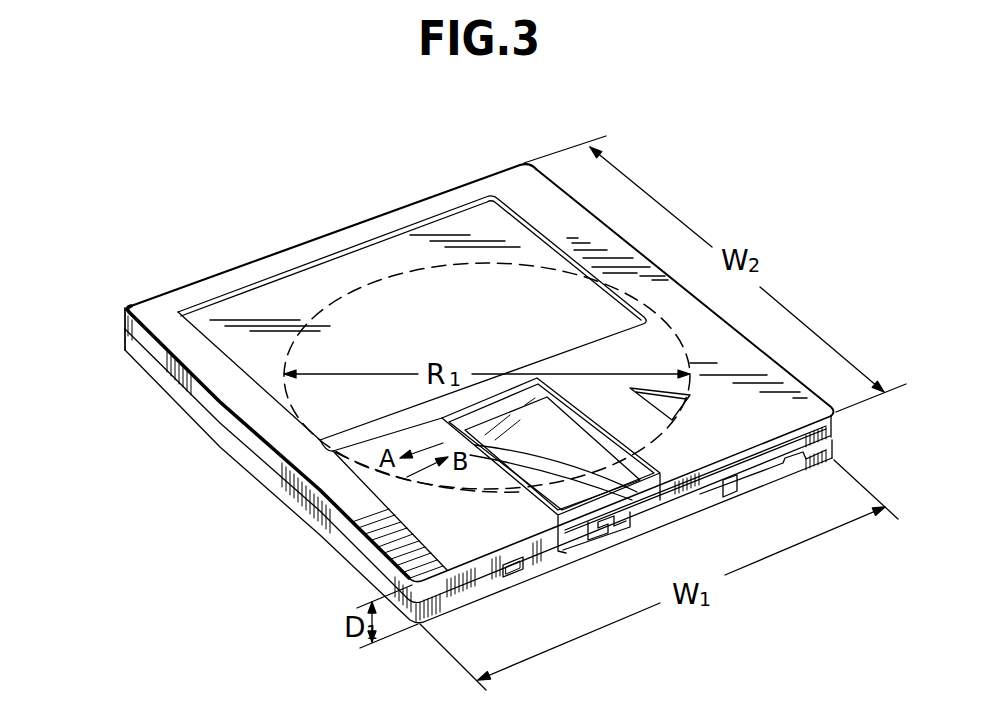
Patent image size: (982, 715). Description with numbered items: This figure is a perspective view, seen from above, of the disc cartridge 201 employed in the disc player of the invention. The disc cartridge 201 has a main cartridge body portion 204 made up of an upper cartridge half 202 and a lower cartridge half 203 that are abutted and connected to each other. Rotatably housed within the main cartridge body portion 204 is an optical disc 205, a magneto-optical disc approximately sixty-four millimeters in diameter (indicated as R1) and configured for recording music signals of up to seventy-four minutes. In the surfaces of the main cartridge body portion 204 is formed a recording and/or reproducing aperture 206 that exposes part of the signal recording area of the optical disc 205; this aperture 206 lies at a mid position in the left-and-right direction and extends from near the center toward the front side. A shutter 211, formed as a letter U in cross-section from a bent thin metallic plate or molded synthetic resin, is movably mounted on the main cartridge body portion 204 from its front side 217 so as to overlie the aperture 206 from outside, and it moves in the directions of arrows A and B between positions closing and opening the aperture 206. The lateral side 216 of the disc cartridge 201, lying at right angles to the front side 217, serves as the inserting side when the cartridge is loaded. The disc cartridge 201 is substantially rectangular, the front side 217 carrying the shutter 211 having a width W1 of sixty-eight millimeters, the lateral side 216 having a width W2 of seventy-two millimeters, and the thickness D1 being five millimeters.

The disc cartridge 201 is at (318, 226).
The upper cartridge half 202 is at (124, 308).
The lower cartridge half 203 is at (128, 348).
The main cartridge body portion 204 is at (176, 254).
The optical disc 205 is at (513, 458).
The recording and/or reproducing aperture 206 is at (624, 440).
The shutter 211 is at (493, 588).
The lateral side 216 is at (807, 383).
The front side 217 is at (750, 484).